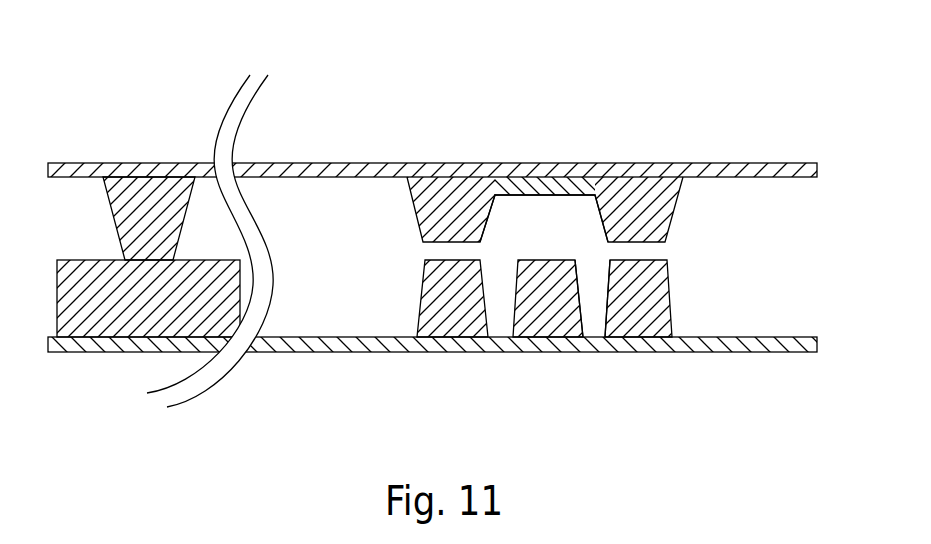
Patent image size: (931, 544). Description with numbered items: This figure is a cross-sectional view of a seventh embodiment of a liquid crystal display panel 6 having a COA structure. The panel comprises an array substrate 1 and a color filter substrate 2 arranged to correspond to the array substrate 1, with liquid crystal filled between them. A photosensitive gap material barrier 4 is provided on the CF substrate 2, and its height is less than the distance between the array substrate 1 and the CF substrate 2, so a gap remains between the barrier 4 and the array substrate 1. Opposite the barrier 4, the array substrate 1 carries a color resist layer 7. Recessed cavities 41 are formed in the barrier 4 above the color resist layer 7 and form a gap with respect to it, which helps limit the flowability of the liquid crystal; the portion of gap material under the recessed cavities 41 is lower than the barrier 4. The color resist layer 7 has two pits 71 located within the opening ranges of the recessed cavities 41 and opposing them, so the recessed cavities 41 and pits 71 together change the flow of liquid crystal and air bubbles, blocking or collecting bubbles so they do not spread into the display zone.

The array substrate 1 is at (125, 345).
The color filter (CF) substrate 2 is at (757, 175).
The photosensitive gap material barrier 4 is at (447, 217).
The recessed cavities 41 is at (537, 220).
The display panel 6 is at (82, 135).
The color resist layer 7 is at (640, 307).
The pits 71 is at (587, 288).